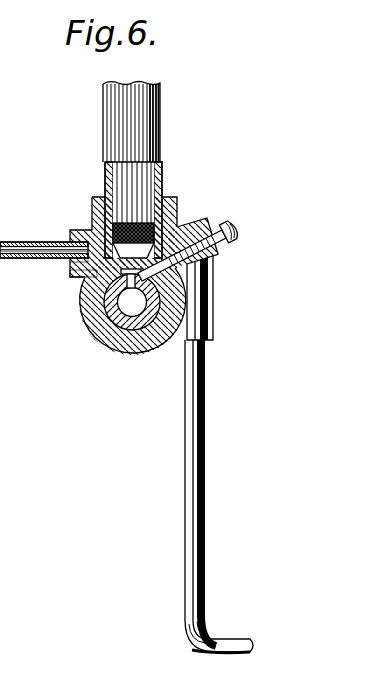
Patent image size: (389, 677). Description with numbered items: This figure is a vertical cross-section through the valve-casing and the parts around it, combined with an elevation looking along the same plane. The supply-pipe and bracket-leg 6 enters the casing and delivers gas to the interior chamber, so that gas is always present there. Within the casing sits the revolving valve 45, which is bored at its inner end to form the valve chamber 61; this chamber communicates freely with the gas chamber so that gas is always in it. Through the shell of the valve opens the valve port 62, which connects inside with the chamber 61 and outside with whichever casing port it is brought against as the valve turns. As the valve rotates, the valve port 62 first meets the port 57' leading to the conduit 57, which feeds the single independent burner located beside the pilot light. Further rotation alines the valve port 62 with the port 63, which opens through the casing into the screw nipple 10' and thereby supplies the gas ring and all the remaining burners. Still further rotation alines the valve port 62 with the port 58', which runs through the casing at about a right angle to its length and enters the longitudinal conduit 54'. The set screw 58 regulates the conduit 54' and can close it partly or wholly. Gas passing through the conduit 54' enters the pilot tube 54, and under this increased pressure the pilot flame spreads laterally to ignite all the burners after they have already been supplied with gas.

The supply-pipe and bracket-leg 6 is at (162, 128).
The screw nipple 10' is at (158, 201).
The revolving valve 45 is at (124, 313).
The pilot tube 54 is at (198, 454).
The right-angled port or conduit 54' is at (215, 243).
The conduit 57 is at (44, 234).
The port 57' is at (50, 275).
The set screw 58 is at (194, 237).
The port 58' is at (146, 230).
The valve chamber 61 is at (153, 351).
The valve port 62 is at (104, 328).
The port 63 is at (82, 273).